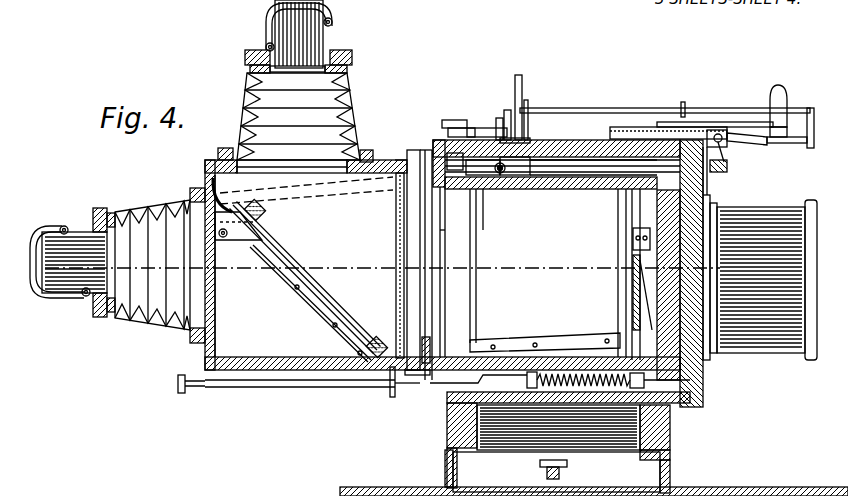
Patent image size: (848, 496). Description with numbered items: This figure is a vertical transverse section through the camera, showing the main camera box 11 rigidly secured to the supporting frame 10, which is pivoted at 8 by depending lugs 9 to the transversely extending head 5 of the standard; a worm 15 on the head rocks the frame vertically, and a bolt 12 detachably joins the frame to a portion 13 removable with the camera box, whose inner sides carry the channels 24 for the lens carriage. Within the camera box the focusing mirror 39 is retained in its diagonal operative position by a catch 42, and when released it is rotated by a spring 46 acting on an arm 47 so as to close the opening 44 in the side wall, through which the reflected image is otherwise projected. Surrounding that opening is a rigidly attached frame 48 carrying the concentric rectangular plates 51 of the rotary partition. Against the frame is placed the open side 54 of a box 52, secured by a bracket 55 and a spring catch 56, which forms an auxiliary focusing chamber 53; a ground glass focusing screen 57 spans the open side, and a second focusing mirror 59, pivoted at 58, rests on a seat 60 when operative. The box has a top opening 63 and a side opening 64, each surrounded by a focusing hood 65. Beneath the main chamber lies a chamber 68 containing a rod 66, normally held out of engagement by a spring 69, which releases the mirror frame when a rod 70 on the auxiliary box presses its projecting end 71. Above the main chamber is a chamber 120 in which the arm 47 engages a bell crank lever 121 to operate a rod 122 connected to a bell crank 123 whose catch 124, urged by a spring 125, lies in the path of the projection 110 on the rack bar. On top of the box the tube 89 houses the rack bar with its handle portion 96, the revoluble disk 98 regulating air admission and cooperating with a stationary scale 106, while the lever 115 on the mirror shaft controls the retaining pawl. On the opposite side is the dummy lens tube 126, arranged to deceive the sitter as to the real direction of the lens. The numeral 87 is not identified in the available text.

The head 5 is at (722, 273).
The pivot 8 is at (455, 162).
The depending lugs 9 is at (670, 480).
The supporting frame 10 is at (620, 452).
The main camera box 11 is at (557, 146).
The bolt 12 is at (567, 475).
The removable frame portion 13 is at (668, 455).
The worm 15 is at (468, 188).
The grooves or channels 24 is at (668, 435).
The focusing mirror 39 is at (556, 260).
The catch 42 is at (640, 295).
The opening 44 is at (477, 296).
The spring 46 is at (500, 175).
The arm 47 is at (485, 192).
The frame 48 is at (425, 155).
The rectangular plates 51 is at (428, 338).
The box 52 is at (270, 373).
The auxiliary focusing chamber 53 is at (442, 259).
The open side 54 is at (432, 248).
The bracket 55 is at (397, 395).
The spring catch 56 is at (400, 158).
The ground glass focusing screen 57 is at (400, 245).
The pivot 58 is at (226, 240).
The second focusing mirror 59 is at (333, 300).
The seat 60 is at (322, 308).
The opening 63 is at (272, 164).
The opening 64 is at (210, 305).
The focusing hood 65 is at (333, 96).
The rod 66 is at (458, 400).
The chamber 68 is at (700, 395).
The spring 69 is at (612, 390).
The rod 70 is at (223, 388).
The projecting end 71 is at (422, 392).
The block 87 is at (455, 112).
The tube 89 is at (697, 120).
The handle portion 96 is at (781, 95).
The revoluble disk 98 is at (513, 110).
The stationary scale 106 is at (522, 88).
The projection 110 is at (772, 127).
The lever 115 is at (490, 128).
The chamber 120 is at (708, 183).
The bell crank lever 121 is at (520, 176).
The rod 122 is at (600, 171).
The bell crank 123 is at (745, 146).
The catch 124 is at (767, 144).
The spring 125 is at (727, 167).
The dummy lens tube 126 is at (760, 277).